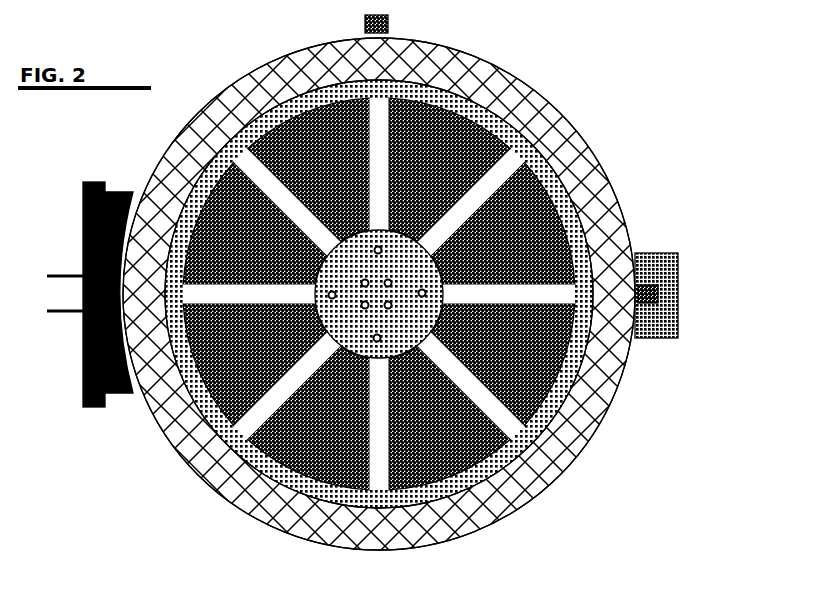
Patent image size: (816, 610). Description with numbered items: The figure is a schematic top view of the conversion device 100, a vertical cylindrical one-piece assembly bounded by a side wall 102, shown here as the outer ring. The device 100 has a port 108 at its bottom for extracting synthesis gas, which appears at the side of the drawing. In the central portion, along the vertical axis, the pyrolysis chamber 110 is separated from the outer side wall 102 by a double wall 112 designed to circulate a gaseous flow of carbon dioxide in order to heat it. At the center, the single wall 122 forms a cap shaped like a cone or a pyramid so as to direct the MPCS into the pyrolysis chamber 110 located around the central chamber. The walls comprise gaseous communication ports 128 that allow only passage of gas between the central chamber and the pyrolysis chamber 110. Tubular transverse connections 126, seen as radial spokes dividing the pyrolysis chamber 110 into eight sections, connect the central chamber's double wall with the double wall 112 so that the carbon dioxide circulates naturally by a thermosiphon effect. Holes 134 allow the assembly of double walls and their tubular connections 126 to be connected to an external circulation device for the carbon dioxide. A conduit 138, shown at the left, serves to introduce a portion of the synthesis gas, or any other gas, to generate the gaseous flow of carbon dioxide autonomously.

The conversion device 100 is at (383, 293).
The side wall 102 is at (562, 118).
The port 108 is at (682, 284).
The pyrolysis chamber 110 is at (340, 167).
The double wall 112 is at (570, 373).
The single wall 122 is at (441, 265).
The tubular transverse connections 126 is at (372, 428).
The gaseous communication ports 128 is at (421, 290).
The holes 134 is at (388, 25).
The conduit 138 is at (60, 272).